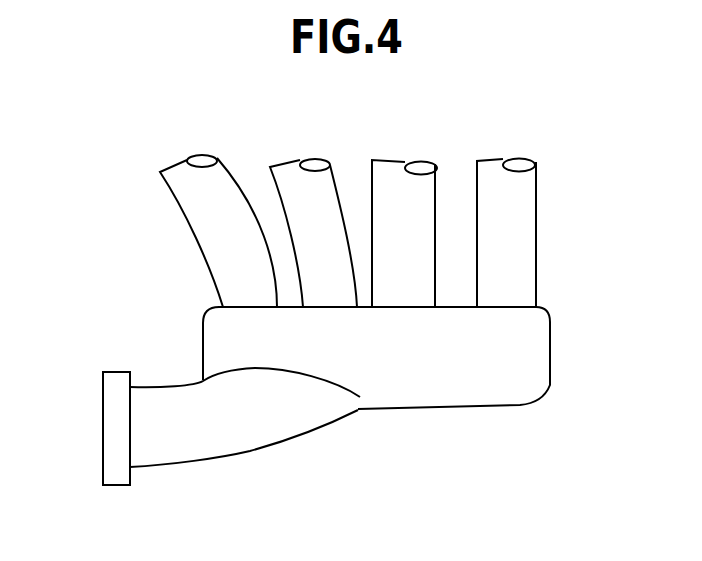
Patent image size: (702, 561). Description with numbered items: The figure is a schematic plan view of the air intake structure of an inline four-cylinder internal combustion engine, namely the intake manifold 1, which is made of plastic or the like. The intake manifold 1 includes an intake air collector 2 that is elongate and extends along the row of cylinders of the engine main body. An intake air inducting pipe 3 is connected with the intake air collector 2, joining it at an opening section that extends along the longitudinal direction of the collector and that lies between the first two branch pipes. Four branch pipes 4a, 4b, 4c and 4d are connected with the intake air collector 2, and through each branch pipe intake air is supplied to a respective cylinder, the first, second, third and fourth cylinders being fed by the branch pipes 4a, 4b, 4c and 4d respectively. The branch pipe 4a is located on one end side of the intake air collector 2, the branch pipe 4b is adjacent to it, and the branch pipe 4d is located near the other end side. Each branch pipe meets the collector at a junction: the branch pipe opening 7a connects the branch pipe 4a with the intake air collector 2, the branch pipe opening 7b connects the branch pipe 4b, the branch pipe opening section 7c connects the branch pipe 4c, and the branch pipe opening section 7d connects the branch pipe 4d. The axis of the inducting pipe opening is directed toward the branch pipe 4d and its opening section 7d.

The intake manifold 1 is at (147, 308).
The intake air collector 2 is at (482, 393).
The intake air inducting pipe 3 is at (253, 440).
The branch pipe 4a is at (197, 208).
The branch pipe 4b is at (313, 200).
The branch pipe 4c is at (417, 202).
The branch pipe 4d is at (522, 217).
The branch pipe opening 7a is at (243, 305).
The branch pipe opening 7b is at (330, 303).
The branch pipe opening section 7c is at (393, 307).
The branch pipe opening section 7d is at (515, 307).